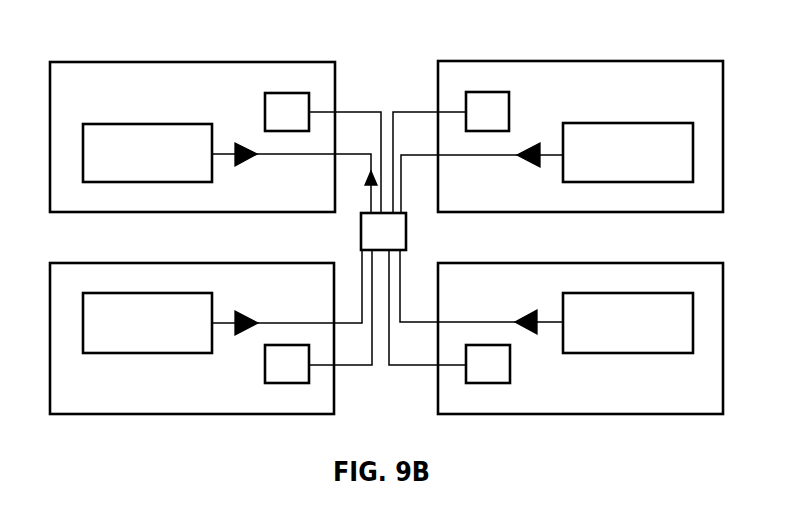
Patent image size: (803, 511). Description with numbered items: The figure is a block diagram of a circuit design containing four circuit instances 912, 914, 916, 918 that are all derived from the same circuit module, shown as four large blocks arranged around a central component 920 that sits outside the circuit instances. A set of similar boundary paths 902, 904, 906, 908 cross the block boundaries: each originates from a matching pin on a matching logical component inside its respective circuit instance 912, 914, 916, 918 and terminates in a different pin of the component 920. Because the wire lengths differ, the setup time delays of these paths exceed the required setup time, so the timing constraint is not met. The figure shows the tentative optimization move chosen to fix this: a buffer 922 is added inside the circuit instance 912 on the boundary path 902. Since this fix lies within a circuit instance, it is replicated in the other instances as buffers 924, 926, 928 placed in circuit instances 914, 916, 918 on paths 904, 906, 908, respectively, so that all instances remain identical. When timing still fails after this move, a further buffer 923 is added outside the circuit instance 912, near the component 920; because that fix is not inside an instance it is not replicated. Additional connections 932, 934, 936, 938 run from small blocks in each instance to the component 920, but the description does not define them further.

The boundary path 902 is at (352, 155).
The boundary path 904 is at (483, 157).
The boundary path 906 is at (327, 321).
The boundary path 908 is at (442, 321).
The circuit instance 912 is at (222, 61).
The circuit instance 914 is at (587, 59).
The circuit instance 916 is at (220, 414).
The circuit instance 918 is at (562, 415).
The component 920 is at (406, 228).
The buffer 922 is at (247, 157).
The buffer 923 is at (366, 178).
The buffer 924 is at (532, 163).
The buffer 926 is at (253, 325).
The buffer 928 is at (528, 330).
The control line from first device 932 is at (348, 112).
The control line to second device 934 is at (403, 108).
The control line from third device 936 is at (343, 367).
The control line to fourth device 938 is at (390, 367).